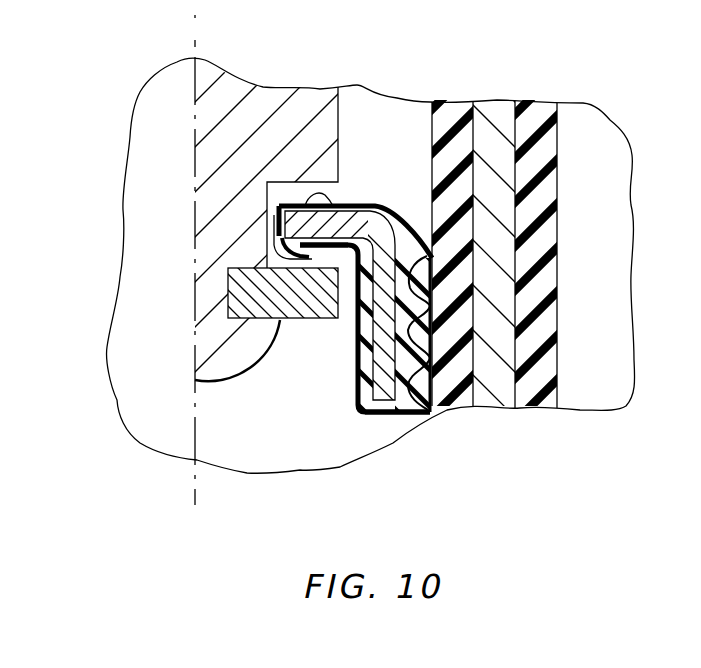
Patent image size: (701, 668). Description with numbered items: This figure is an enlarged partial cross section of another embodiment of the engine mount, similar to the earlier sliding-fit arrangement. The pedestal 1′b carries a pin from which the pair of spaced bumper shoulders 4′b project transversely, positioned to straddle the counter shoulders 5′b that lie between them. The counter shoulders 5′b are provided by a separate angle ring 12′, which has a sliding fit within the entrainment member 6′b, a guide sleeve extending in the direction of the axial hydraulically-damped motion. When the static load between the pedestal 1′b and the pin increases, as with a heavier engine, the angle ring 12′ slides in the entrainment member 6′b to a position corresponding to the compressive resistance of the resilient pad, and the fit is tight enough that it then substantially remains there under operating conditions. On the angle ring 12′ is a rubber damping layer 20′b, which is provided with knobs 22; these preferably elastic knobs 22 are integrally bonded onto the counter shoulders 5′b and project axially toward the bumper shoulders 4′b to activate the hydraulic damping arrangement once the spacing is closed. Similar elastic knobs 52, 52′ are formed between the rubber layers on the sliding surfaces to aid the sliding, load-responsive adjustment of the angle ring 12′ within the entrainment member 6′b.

The pedestal 1′b is at (265, 102).
The bumper shoulders 4′b is at (283, 203).
The knobs 22 is at (286, 252).
The counter shoulders 5′b is at (338, 245).
The rubber damping layer 20′b is at (338, 245).
The angle ring 12′ is at (381, 385).
The elastic knobs 52′ is at (424, 302).
The elastic knobs 52 is at (410, 413).
The entrainment member 6′b is at (498, 385).